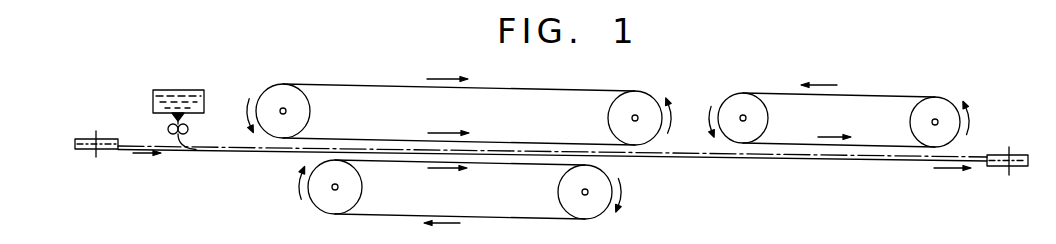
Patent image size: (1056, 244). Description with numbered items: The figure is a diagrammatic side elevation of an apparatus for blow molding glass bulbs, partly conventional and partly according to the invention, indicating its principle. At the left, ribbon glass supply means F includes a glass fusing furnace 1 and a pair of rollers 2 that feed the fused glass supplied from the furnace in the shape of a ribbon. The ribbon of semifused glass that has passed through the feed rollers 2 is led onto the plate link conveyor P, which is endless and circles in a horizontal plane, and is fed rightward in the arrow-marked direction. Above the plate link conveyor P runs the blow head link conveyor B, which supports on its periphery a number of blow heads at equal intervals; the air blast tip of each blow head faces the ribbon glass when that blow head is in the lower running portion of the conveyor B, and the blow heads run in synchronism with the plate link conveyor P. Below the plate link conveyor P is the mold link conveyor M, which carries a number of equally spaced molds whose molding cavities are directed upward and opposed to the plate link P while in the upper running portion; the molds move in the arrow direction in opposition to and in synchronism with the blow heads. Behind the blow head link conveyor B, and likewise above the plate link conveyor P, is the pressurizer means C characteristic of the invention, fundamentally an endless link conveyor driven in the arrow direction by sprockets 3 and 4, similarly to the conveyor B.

The glass fusing furnace 1 is at (205, 94).
The pair of rollers 2 is at (189, 129).
The sprocket 3 is at (738, 103).
The sprocket 4 is at (941, 105).
The ribbon glass supply means F is at (138, 89).
The blow head link conveyor B is at (374, 75).
The pressurizer means C is at (839, 99).
The plate link conveyor P is at (686, 166).
The mold link conveyor M is at (384, 225).